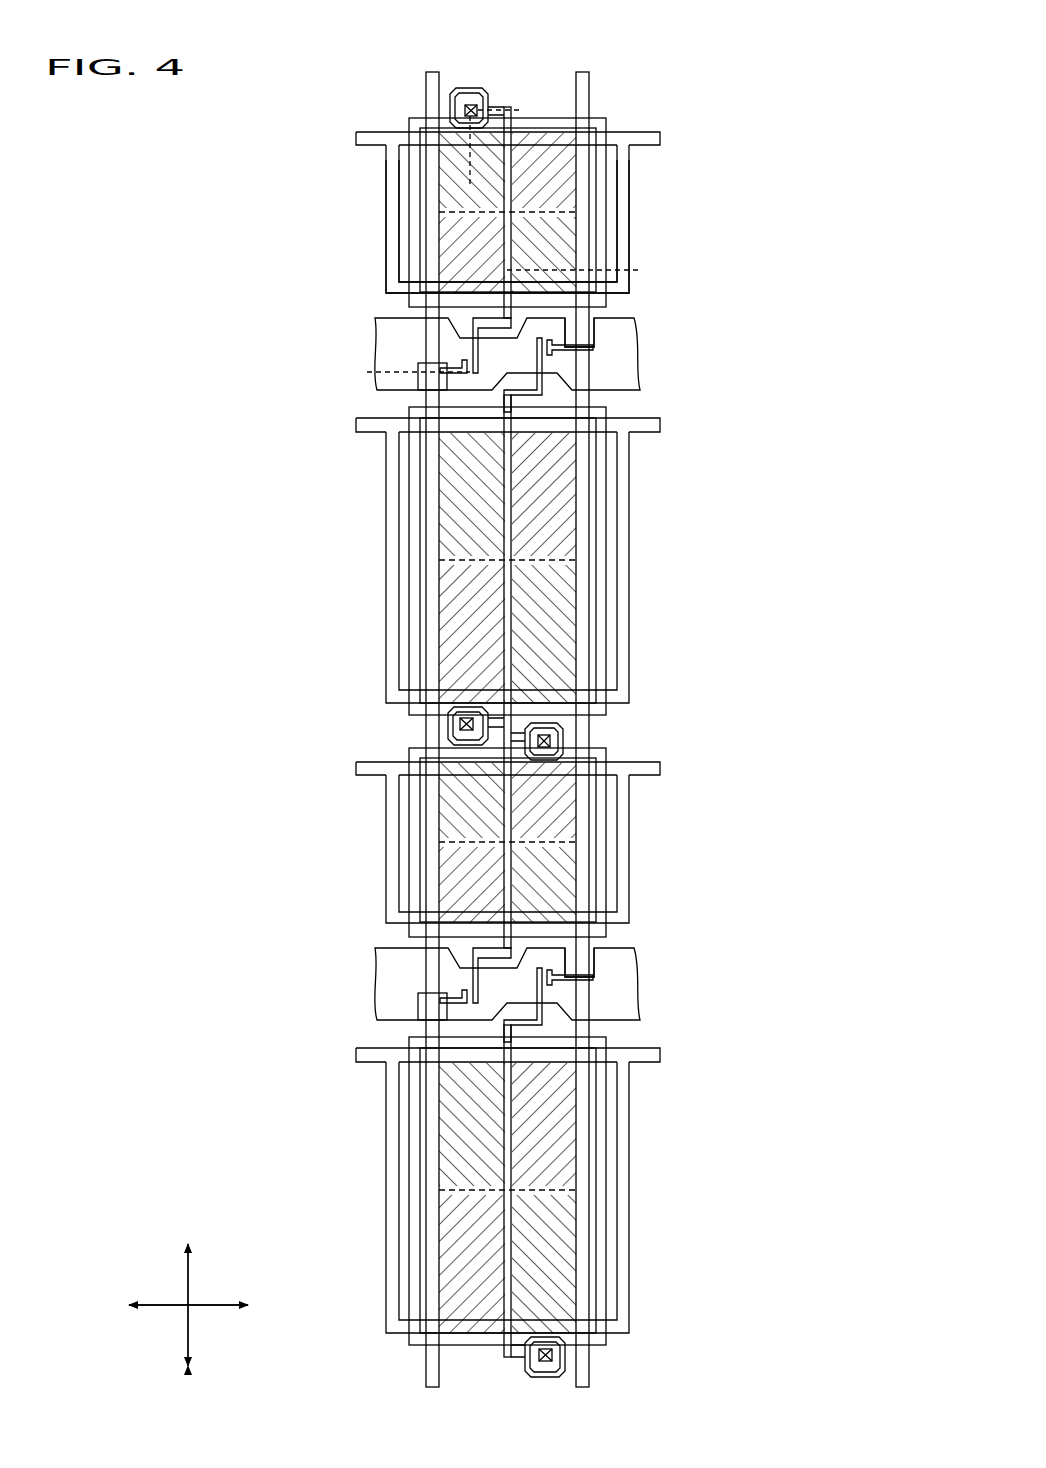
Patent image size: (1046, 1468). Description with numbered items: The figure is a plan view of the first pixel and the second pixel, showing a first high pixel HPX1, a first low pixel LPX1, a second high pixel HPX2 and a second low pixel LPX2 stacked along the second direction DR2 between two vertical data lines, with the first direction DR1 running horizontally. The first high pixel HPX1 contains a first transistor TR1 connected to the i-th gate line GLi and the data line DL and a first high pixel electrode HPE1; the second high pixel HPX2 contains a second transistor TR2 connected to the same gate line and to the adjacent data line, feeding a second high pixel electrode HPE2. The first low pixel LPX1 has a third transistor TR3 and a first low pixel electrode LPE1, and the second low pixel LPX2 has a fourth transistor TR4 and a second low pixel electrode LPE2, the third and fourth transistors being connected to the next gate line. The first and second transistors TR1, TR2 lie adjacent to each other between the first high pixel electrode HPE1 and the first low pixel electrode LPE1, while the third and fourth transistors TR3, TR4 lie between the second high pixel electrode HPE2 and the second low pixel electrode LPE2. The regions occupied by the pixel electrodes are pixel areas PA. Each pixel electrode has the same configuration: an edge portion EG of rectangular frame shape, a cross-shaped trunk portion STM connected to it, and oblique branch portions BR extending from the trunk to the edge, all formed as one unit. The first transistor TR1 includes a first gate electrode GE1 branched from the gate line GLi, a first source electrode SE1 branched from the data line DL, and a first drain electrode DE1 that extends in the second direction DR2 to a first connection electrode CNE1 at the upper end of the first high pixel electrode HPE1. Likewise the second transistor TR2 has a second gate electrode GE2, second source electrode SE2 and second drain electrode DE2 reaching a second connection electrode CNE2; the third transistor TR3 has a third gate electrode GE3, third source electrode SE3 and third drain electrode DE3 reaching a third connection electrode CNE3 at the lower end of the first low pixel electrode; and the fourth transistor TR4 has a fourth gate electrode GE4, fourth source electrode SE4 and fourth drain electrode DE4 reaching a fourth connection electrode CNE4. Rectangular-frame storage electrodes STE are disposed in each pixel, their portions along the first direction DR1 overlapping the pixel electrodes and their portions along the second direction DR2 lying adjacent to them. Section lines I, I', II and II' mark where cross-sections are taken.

The data line DL is at (433, 70).
The first connection electrode CNE1 is at (471, 86).
The second connection electrode CNE2 is at (566, 741).
The third connection electrode CNE3 is at (450, 721).
The fourth connection electrode CNE4 is at (567, 1357).
The pixel area PA is at (553, 114).
The storage electrode STE is at (361, 138).
The edge portion EG is at (417, 180).
The trunk portion STM is at (433, 210).
The branch portions BR is at (450, 247).
The first high pixel electrode HPE1 is at (424, 212).
The second high pixel electrode HPE2 is at (440, 841).
The first high pixel HPX1 is at (636, 215).
The second high pixel HPX2 is at (636, 811).
The first low pixel LPX1 is at (638, 530).
The second low pixel LPX2 is at (638, 1160).
The first low pixel electrode LPE1 is at (437, 546).
The second low pixel electrode LPE2 is at (437, 1181).
The i-th gate line GLi is at (383, 340).
The first transistor TR1 is at (371, 390).
The second transistor TR2 is at (641, 358).
The third transistor TR3 is at (371, 1020).
The fourth transistor TR4 is at (641, 988).
The first source electrode SE1 is at (468, 375).
The first gate electrode GE1 is at (440, 386).
The first drain electrode DE1 is at (478, 381).
The second source electrode SE2 is at (551, 357).
The second gate electrode GE2 is at (562, 322).
The second drain electrode DE2 is at (543, 379).
The third source electrode SE3 is at (468, 1005).
The third gate electrode GE3 is at (440, 1016).
The third drain electrode DE3 is at (478, 1011).
The fourth source electrode SE4 is at (551, 987).
The fourth gate electrode GE4 is at (562, 952).
The fourth drain electrode DE4 is at (543, 1009).
The section line I is at (577, 271).
The section line I' is at (410, 373).
The section line II is at (465, 160).
The section line II' is at (509, 111).
The first direction DR1 is at (209, 1305).
The second direction DR2 is at (190, 1291).